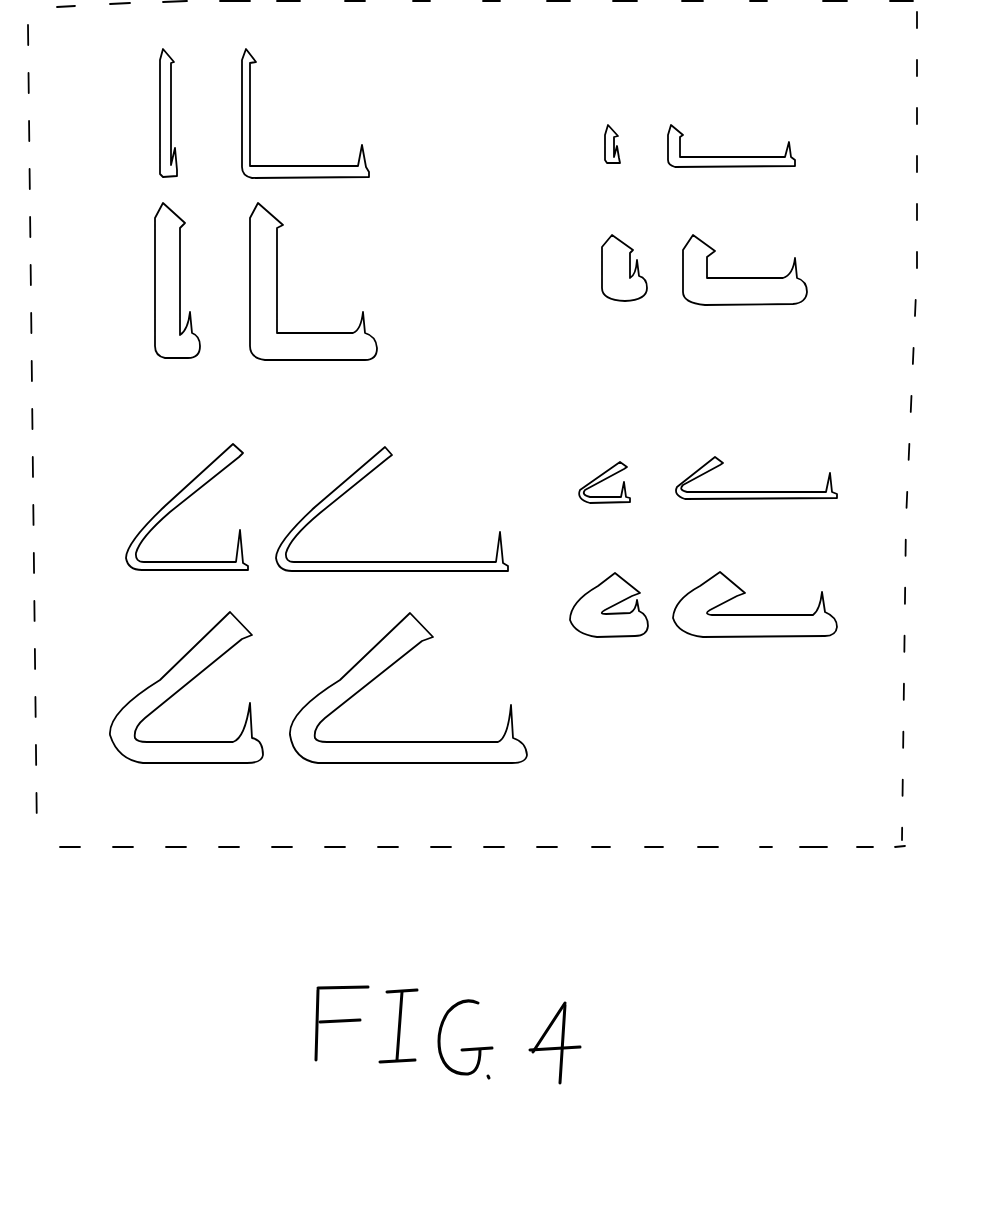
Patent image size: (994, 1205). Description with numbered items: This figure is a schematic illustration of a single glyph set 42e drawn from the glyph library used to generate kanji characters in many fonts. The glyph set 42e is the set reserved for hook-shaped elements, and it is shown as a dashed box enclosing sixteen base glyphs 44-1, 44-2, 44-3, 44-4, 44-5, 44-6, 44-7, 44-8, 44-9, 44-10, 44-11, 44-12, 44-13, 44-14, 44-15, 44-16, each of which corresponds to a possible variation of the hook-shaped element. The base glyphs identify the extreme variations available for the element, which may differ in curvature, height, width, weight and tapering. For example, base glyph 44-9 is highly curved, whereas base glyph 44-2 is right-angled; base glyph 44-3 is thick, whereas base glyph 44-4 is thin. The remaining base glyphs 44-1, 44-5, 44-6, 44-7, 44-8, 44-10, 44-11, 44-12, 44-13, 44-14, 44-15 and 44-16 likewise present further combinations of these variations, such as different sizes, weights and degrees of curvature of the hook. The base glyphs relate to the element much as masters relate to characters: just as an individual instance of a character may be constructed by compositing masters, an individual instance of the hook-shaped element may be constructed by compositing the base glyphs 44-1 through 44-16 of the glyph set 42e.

The glyph set 42e is at (655, 849).
The base glyph 44-1 is at (161, 112).
The base glyph 44-2 is at (251, 127).
The base glyph 44-3 is at (155, 287).
The base glyph 44-4 is at (277, 296).
The base glyph 44-5 is at (605, 138).
The base glyph 44-6 is at (725, 160).
The base glyph 44-7 is at (607, 278).
The base glyph 44-8 is at (752, 280).
The base glyph 44-9 is at (167, 497).
The base glyph 44-10 is at (346, 487).
The base glyph 44-11 is at (160, 672).
The base glyph 44-12 is at (415, 742).
The base glyph 44-13 is at (598, 483).
The base glyph 44-14 is at (748, 492).
The base glyph 44-15 is at (591, 637).
The base glyph 44-16 is at (731, 638).